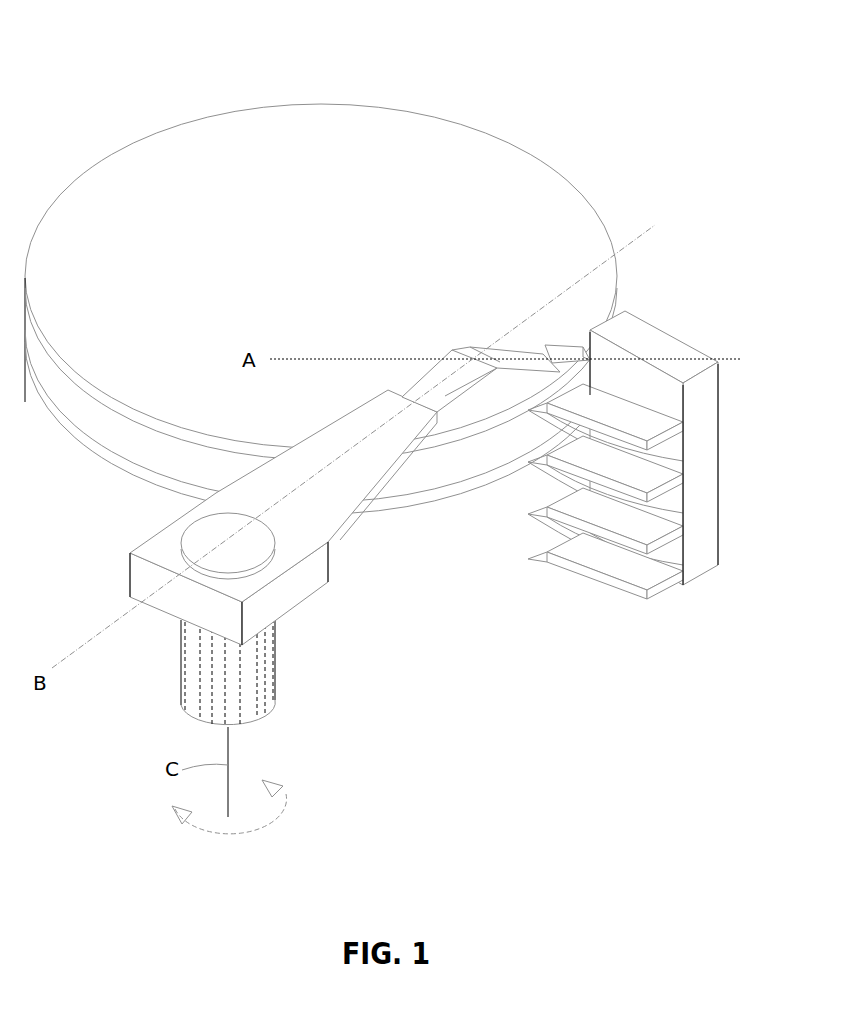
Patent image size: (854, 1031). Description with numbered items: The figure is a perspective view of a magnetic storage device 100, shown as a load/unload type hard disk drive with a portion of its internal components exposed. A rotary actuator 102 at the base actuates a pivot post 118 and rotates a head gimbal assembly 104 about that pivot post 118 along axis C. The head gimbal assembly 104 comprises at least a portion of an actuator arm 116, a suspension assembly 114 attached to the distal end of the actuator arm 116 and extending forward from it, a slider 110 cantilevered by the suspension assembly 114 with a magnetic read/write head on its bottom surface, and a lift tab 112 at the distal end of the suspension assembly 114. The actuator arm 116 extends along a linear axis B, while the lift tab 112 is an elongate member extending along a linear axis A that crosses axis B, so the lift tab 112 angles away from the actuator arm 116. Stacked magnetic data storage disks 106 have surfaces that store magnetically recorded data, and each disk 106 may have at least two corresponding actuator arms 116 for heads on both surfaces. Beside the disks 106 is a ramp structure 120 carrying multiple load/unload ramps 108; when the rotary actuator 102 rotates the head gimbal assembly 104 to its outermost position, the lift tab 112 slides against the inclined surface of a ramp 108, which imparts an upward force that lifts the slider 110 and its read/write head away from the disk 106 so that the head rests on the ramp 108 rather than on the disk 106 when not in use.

The magnetic storage device 100 is at (139, 86).
The rotary actuator 102 is at (267, 670).
The head gimbal assembly 104 is at (357, 343).
The magnetic data storage disk 106 is at (206, 388).
The load/unload ramp 108 is at (562, 345).
The slider 110 is at (487, 392).
The lift tab 112 is at (521, 355).
The suspension assembly 114 is at (440, 356).
The actuator arm 116 is at (378, 410).
The pivot post 118 is at (231, 545).
The ramp structure 120 is at (655, 341).